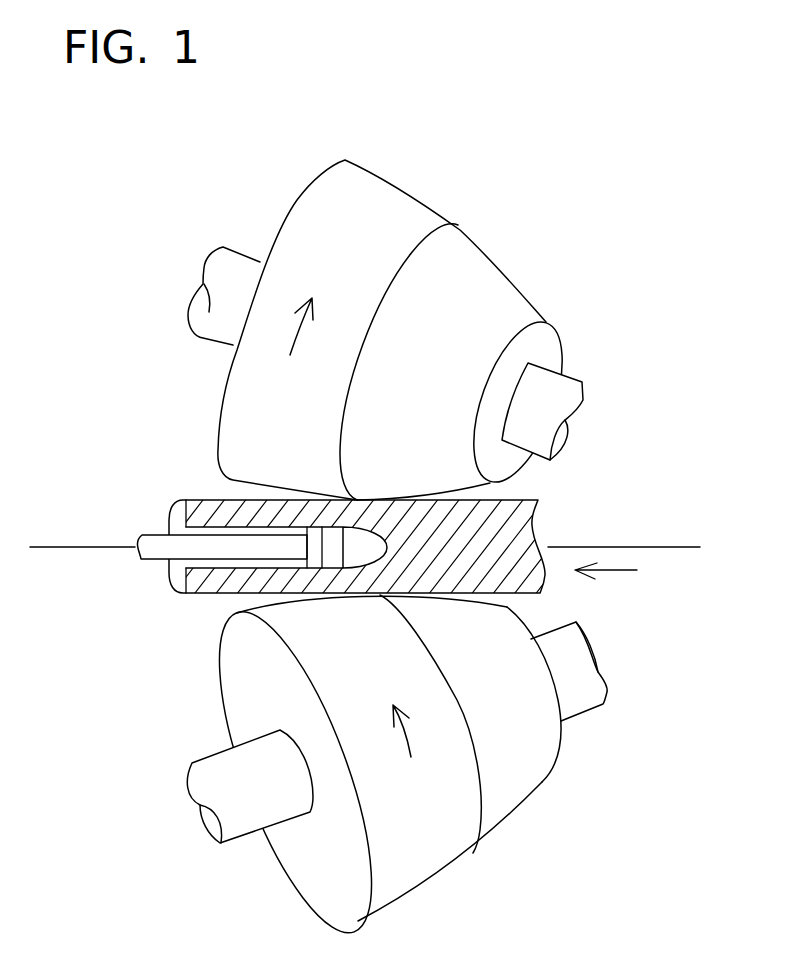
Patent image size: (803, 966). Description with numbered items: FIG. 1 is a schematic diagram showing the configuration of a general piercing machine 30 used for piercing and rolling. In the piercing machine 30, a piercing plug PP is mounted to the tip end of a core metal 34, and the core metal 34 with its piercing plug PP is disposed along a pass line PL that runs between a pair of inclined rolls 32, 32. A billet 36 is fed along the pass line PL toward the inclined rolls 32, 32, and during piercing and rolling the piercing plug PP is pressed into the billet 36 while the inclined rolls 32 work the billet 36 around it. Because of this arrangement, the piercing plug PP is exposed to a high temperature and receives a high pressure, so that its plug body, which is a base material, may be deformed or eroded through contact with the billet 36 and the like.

The piercing machine 30 is at (393, 555).
The inclined roll 32 is at (467, 278).
The core metal 34 is at (157, 539).
The billet 36 is at (537, 531).
The piercing plug PP is at (333, 546).
The pass line PL is at (677, 547).